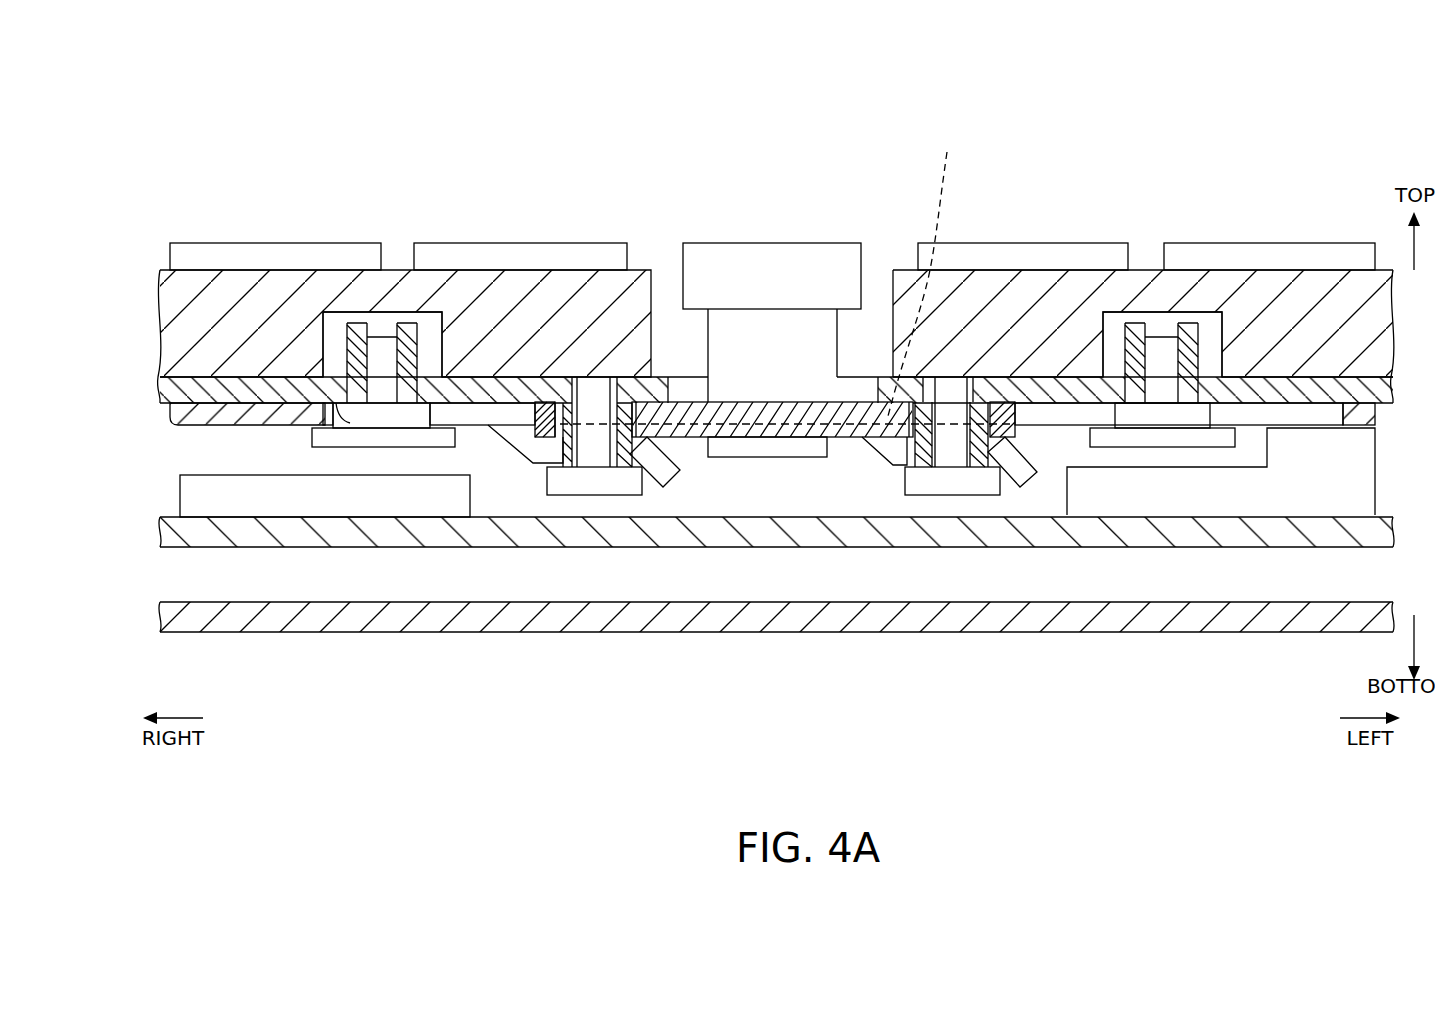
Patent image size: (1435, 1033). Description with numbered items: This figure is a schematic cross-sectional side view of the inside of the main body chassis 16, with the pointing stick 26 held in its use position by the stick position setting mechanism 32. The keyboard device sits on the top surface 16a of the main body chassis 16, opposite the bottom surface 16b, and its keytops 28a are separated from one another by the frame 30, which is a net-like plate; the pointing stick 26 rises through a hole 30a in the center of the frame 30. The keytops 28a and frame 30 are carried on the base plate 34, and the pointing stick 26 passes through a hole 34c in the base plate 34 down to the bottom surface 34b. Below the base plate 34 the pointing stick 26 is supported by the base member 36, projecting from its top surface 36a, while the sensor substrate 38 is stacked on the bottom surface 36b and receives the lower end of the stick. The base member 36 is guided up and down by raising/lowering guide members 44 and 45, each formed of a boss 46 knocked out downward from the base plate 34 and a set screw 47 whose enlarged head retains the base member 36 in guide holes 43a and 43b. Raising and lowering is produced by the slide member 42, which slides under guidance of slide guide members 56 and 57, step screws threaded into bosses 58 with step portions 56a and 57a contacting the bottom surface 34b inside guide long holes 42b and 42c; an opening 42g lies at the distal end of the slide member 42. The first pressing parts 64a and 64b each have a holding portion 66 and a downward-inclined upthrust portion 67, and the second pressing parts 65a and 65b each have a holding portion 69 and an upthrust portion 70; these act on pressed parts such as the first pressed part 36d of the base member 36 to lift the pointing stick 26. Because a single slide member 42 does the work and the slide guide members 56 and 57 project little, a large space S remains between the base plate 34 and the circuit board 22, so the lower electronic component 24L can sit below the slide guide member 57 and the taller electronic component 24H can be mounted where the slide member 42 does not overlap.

The main body chassis 16 is at (104, 86).
The top surface of the main body chassis 16a is at (194, 268).
The bottom surface of the main body chassis 16b is at (1095, 633).
The circuit board 22 is at (443, 533).
The electronic component 24L is at (332, 498).
The electronic component 24H is at (1233, 497).
The pointing stick 26 is at (770, 238).
The keytop 28a is at (255, 255).
The frame 30 is at (176, 326).
The hole 30a is at (891, 298).
The stick position setting mechanism 32 is at (695, 508).
The base plate 34 is at (180, 390).
The bottom surface of the base plate 34b is at (193, 437).
The hole 34c is at (683, 385).
The base member 36 is at (790, 390).
The top surface of the base member 36a is at (748, 390).
The bottom surface of the base member 36b is at (797, 440).
The first pressed part 36d is at (948, 271).
The sensor substrate 38 is at (758, 447).
The slide member 42 is at (270, 440).
The guide long hole 42b is at (1345, 410).
The guide long hole 42c is at (326, 318).
The opening 42g is at (1053, 413).
The guide hole 43a is at (975, 390).
The guide hole 43b is at (577, 397).
The raising/lowering guide member 44 is at (875, 703).
The raising/lowering guide member 45 is at (517, 703).
The boss 46 is at (568, 473).
The set screw 47 is at (597, 483).
The slide guide member 56 is at (1177, 437).
The step portion 56a is at (1162, 415).
The slide guide member 57 is at (385, 447).
The step portion 57a is at (384, 412).
The boss 58 is at (416, 350).
The first pressing part 64a is at (939, 609).
The first pressing part 64b is at (1030, 475).
The second pressing part 65a is at (572, 593).
The second pressing part 65b is at (632, 480).
The holding portion 66 is at (890, 470).
The upthrust portion 67 is at (1027, 455).
The holding portion 69 is at (540, 455).
The upthrust portion 70 is at (672, 473).
The space S is at (292, 458).